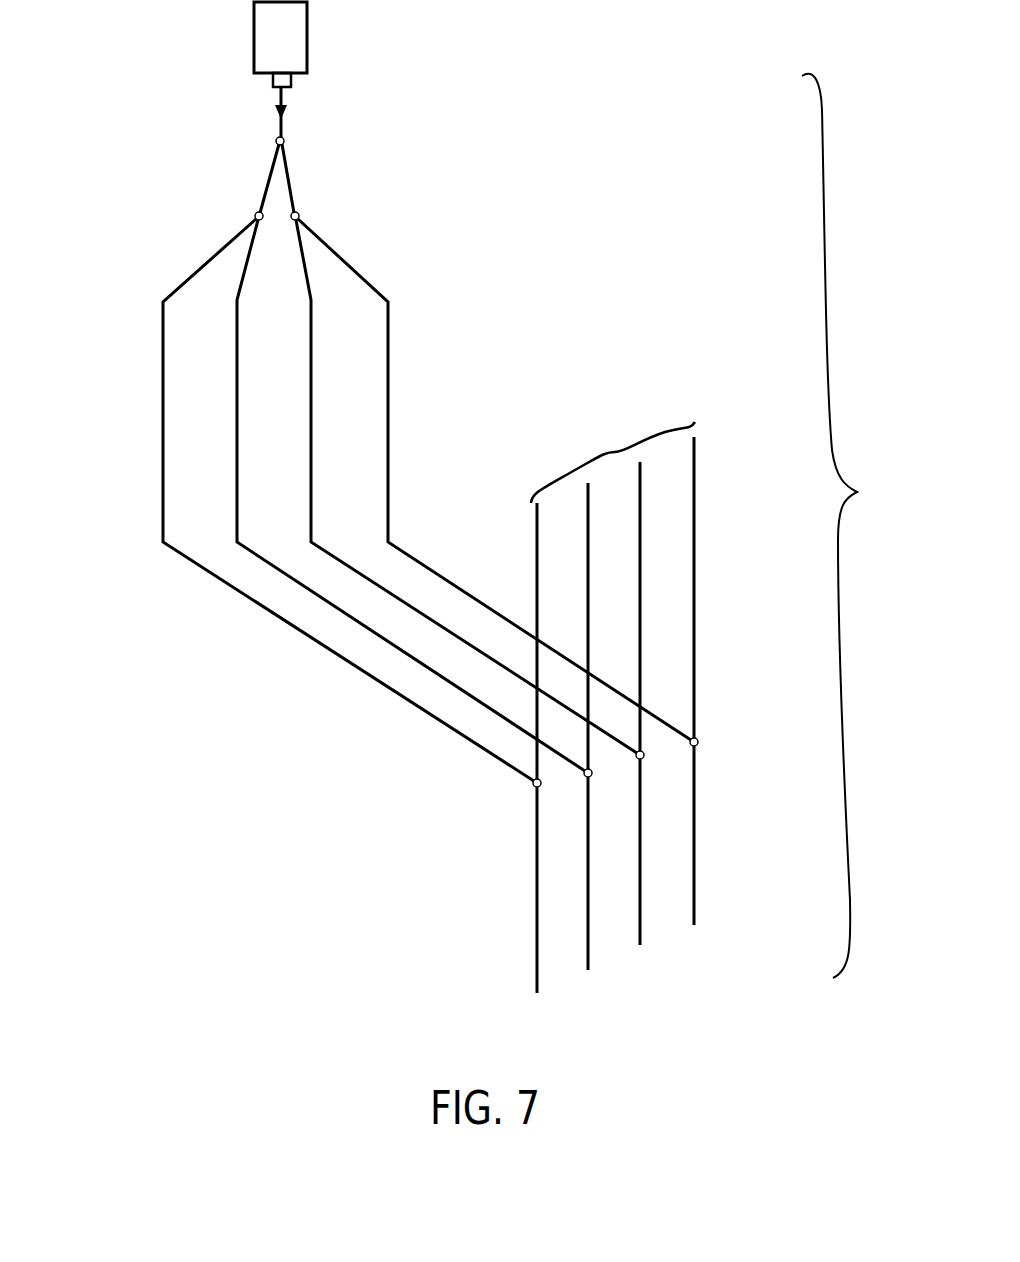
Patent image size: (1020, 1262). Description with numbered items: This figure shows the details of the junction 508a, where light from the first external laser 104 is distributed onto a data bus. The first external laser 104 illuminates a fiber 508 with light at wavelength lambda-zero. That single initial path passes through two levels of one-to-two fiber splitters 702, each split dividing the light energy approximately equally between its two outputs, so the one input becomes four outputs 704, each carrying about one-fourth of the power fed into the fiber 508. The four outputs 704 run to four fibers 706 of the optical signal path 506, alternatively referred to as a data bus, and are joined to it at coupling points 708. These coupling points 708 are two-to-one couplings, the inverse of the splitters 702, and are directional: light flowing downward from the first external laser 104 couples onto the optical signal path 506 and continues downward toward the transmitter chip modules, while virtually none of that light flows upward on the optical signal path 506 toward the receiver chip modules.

The first external laser 104 is at (308, 38).
The fiber 508 is at (277, 125).
The junction 508a is at (868, 526).
The fiber splitters 702 is at (285, 144).
The outputs 704 is at (237, 395).
The fibers 706 is at (640, 600).
The coupling points 708 is at (644, 755).
The optical signal path 506 is at (613, 459).